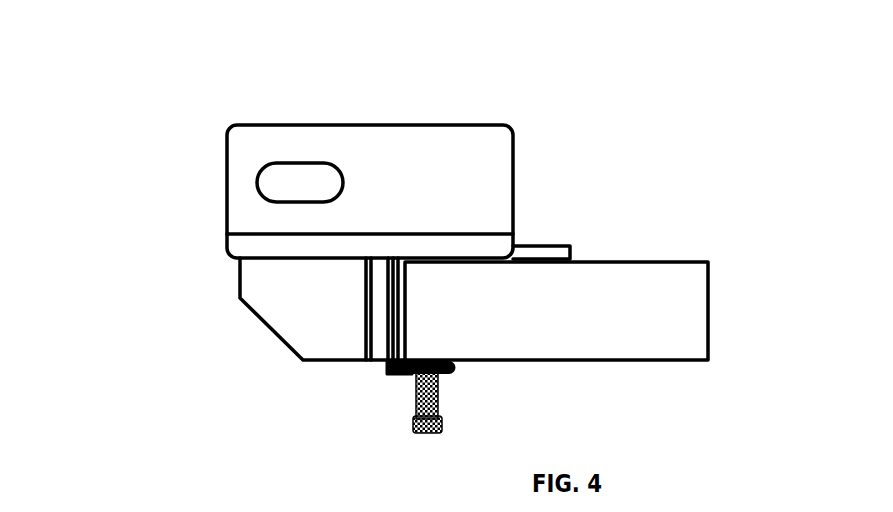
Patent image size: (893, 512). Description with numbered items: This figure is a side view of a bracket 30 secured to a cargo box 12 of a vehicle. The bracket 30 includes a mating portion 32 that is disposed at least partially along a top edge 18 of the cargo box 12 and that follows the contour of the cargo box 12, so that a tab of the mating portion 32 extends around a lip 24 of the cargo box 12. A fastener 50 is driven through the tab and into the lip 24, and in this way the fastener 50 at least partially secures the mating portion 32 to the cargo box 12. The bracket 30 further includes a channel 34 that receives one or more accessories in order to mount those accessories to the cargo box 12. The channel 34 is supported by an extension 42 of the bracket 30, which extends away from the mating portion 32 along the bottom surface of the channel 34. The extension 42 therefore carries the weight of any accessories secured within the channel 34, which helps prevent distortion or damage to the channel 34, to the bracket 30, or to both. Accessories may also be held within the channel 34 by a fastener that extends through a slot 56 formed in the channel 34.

The cargo box 12 is at (708, 367).
The top edge 18 is at (650, 262).
The lip 24 is at (455, 372).
The bracket 30 is at (148, 208).
The mating portion 32 is at (542, 250).
The channel 34 is at (475, 157).
The extension 42 is at (285, 313).
The fastener 50 is at (413, 405).
The slot 56 is at (294, 180).